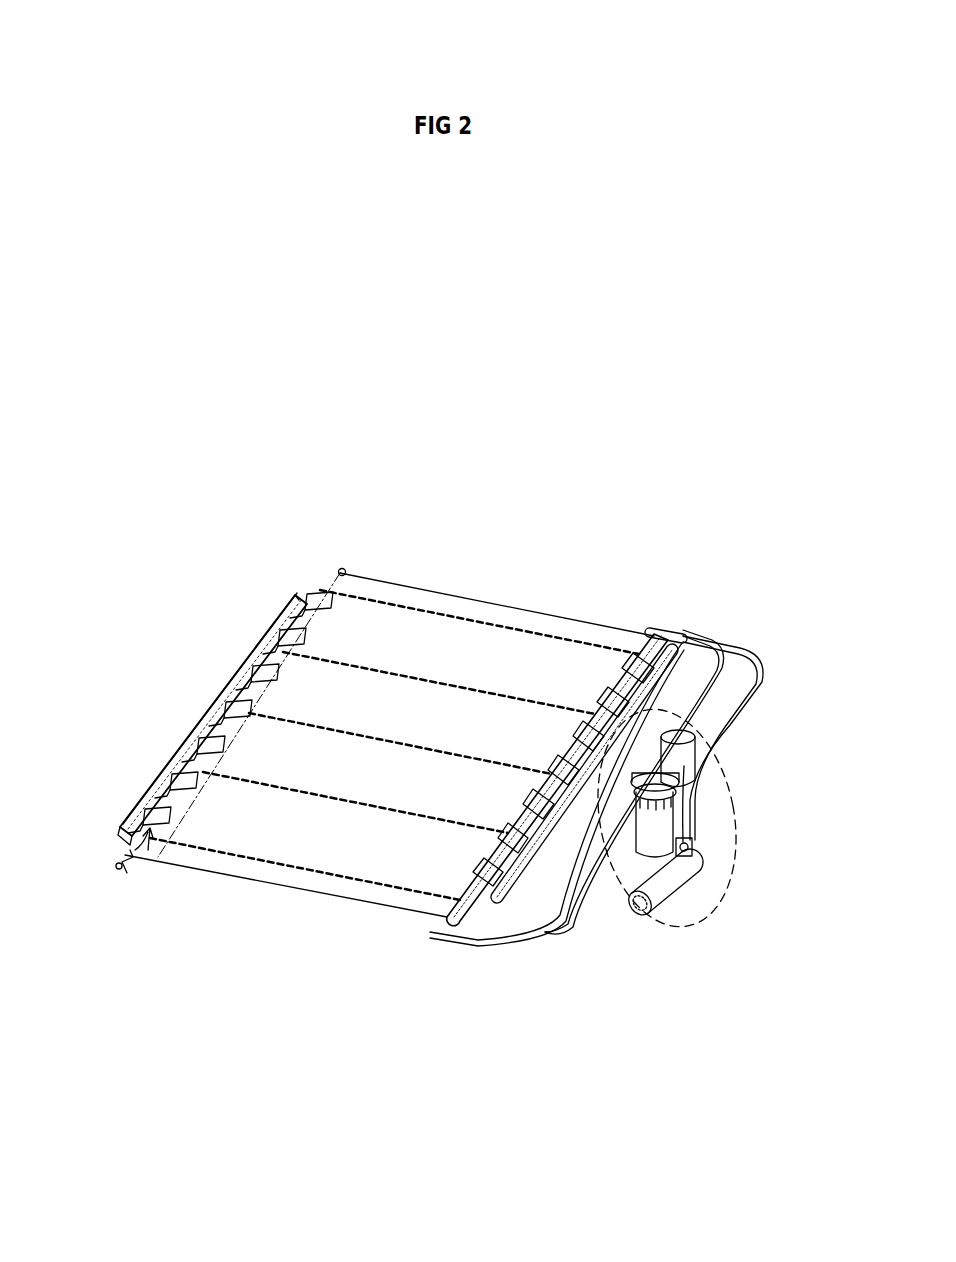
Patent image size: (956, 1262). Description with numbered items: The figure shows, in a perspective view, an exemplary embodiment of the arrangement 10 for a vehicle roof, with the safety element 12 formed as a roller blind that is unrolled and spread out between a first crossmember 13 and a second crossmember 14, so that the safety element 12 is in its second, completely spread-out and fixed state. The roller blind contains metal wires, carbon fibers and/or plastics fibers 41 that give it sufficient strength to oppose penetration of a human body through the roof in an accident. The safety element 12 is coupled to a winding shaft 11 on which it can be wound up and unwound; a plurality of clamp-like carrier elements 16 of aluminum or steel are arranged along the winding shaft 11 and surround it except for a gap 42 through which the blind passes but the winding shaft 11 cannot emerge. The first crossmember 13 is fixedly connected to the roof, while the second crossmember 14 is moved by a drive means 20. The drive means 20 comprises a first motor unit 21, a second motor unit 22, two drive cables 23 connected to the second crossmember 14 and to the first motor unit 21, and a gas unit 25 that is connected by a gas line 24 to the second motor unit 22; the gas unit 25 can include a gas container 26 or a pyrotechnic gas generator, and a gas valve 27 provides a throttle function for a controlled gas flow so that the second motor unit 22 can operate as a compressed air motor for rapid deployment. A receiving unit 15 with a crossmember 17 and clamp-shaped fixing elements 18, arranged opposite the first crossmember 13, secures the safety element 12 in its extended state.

The arrangement 10 is at (302, 418).
The winding shaft 11 is at (127, 873).
The safety element 12 is at (446, 596).
The first crossmember 13 is at (245, 663).
The second crossmember 14 is at (650, 650).
The receiving unit 15 is at (410, 930).
The carrier elements 16 is at (320, 603).
The crossmember 17 is at (662, 670).
The fixing elements 18 is at (608, 700).
The drive means 20 is at (778, 582).
The first motor unit 21 is at (665, 832).
The second motor unit 22 is at (688, 757).
The drive cables 23 is at (477, 945).
The gas line 24 is at (700, 790).
The gas unit 25 is at (740, 920).
The gas container 26 is at (658, 900).
The gas valve 27 is at (690, 850).
The fibers 41 is at (534, 630).
The gap 42 is at (135, 850).